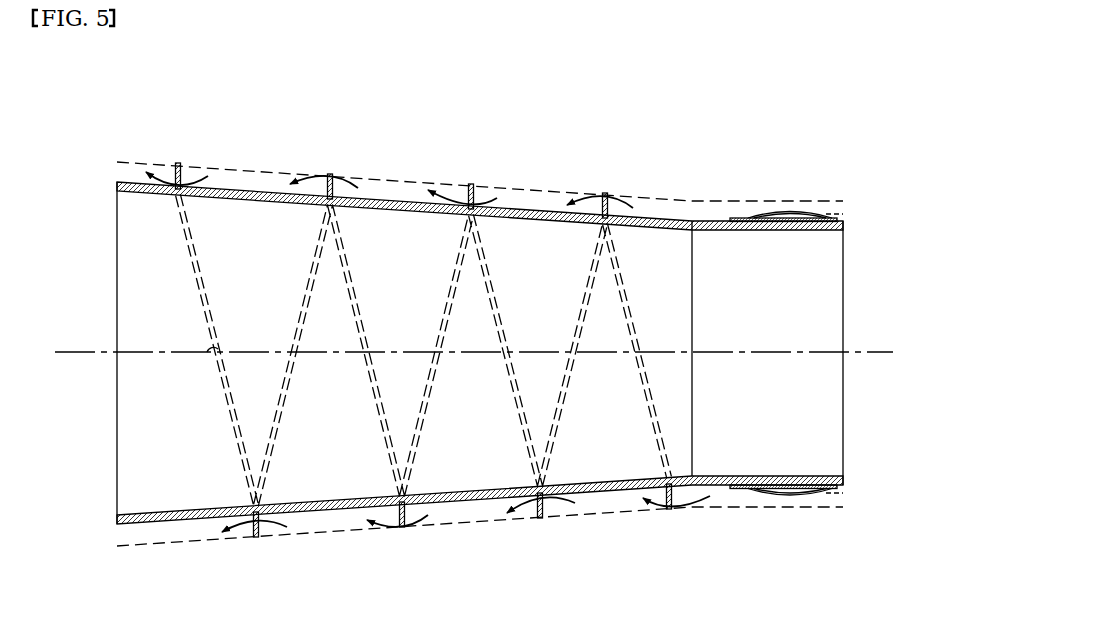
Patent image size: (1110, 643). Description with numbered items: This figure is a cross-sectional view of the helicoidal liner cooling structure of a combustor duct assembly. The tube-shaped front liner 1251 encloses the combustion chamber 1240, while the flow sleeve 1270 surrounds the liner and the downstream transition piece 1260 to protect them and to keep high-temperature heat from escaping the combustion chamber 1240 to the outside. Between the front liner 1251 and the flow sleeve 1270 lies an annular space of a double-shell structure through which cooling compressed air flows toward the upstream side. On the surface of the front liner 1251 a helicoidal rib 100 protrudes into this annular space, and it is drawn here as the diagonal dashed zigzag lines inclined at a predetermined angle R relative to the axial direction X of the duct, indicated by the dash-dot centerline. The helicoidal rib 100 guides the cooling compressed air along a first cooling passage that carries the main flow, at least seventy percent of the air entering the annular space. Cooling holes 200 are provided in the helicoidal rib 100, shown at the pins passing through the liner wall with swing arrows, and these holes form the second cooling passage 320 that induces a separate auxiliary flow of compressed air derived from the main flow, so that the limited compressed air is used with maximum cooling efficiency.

The helicoidal rib 100 is at (472, 187).
The cooling holes 200 is at (473, 204).
The second cooling passage 320 is at (192, 185).
The combustion chamber 1240 is at (253, 240).
The front liner 1251 is at (307, 513).
The transition piece 1260 is at (829, 208).
The flow sleeve 1270 is at (767, 200).
The predetermined angle R is at (212, 346).
The axial direction X is at (466, 353).